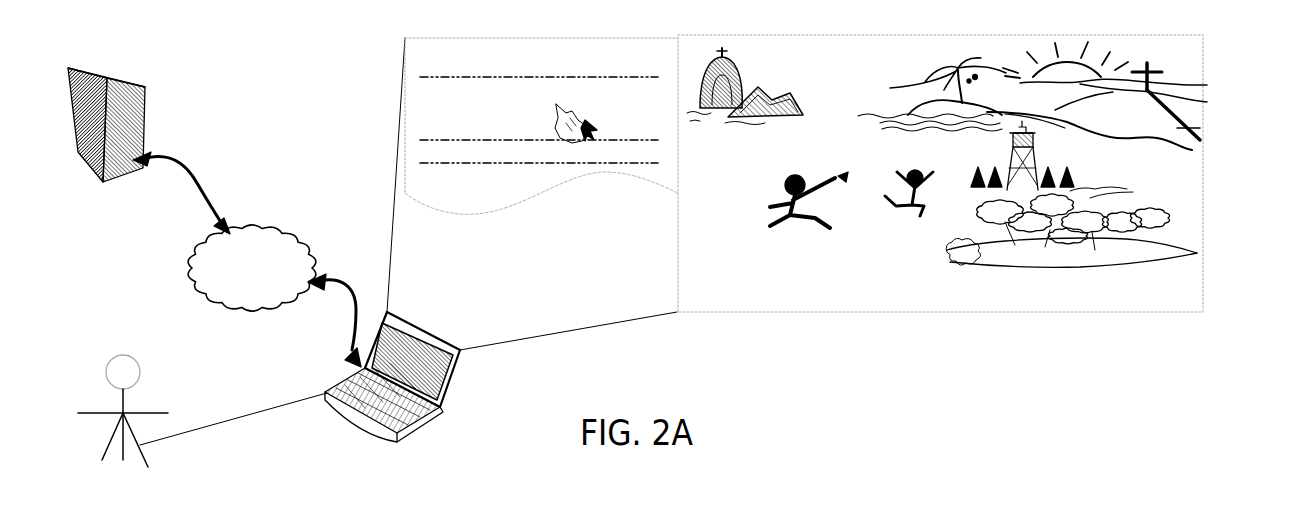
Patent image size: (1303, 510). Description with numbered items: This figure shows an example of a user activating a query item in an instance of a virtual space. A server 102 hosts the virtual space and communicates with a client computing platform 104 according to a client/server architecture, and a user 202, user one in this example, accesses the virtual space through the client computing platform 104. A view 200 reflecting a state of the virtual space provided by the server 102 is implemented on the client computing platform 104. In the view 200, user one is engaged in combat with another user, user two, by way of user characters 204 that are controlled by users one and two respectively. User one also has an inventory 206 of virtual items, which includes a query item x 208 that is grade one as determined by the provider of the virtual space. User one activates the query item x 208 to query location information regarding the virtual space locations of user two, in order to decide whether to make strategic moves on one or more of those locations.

The server 102 is at (147, 86).
The client computing platform 104 is at (450, 391).
The view 200 is at (1205, 48).
The user 202 is at (139, 374).
The user characters 204 is at (823, 227).
The inventory 206 is at (541, 140).
The query item x 208 is at (555, 97).